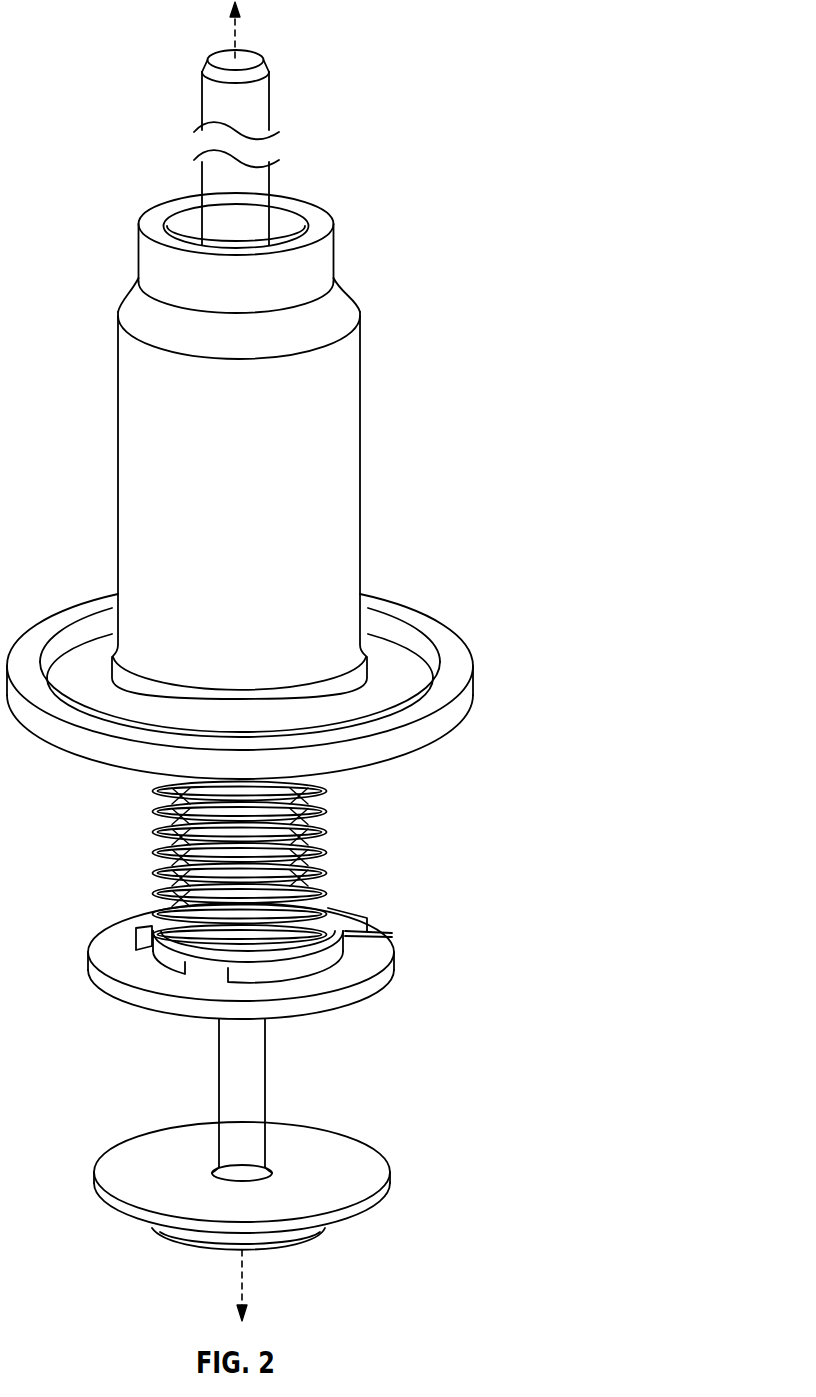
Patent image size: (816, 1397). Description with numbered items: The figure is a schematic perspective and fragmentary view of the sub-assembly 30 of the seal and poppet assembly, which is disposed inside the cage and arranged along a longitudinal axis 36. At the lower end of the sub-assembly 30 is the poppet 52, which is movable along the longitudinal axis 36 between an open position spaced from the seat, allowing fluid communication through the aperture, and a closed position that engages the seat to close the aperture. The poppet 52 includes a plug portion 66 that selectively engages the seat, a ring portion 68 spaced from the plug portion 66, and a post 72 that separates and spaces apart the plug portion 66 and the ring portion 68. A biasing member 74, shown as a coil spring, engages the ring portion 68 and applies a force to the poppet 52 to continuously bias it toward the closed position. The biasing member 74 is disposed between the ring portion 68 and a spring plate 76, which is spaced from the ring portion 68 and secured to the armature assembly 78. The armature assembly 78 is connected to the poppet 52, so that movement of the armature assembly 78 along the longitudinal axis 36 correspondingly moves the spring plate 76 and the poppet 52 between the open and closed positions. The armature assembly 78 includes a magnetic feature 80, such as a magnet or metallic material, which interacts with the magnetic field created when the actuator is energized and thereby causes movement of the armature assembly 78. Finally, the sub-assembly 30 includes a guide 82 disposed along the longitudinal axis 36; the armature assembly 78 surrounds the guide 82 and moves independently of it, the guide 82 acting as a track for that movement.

The sub-assembly 30 is at (583, 126).
The longitudinal axis 36 is at (237, 43).
The poppet 52 is at (113, 1102).
The plug portion 66 is at (300, 1243).
The ring portion 68 is at (395, 963).
The post 72 is at (266, 1083).
The biasing member 74 is at (327, 828).
The spring plate 76 is at (474, 690).
The armature assembly 78 is at (288, 446).
The magnetic feature 80 is at (360, 480).
The guide 82 is at (270, 113).